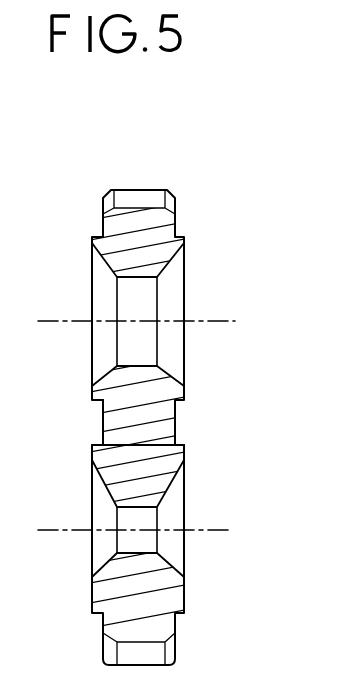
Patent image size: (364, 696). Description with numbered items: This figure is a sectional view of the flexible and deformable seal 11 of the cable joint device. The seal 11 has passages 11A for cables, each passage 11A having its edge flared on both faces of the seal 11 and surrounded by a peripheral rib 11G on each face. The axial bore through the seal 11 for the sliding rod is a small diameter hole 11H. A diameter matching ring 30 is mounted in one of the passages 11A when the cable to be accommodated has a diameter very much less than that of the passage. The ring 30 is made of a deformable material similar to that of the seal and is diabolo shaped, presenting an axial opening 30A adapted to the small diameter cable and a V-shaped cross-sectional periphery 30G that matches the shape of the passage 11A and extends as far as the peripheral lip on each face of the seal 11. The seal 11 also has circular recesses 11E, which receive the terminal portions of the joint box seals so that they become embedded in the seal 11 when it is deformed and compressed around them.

The seal 11 is at (130, 185).
The peripheral rib 11G is at (92, 246).
The passage 11A is at (143, 366).
The small diameter hole 11H is at (103, 408).
The circular recess 11E is at (184, 466).
The diameter matching ring 30 is at (86, 590).
The V-shaped cross-sectional periphery 30G is at (92, 482).
The axial opening 30A is at (140, 552).